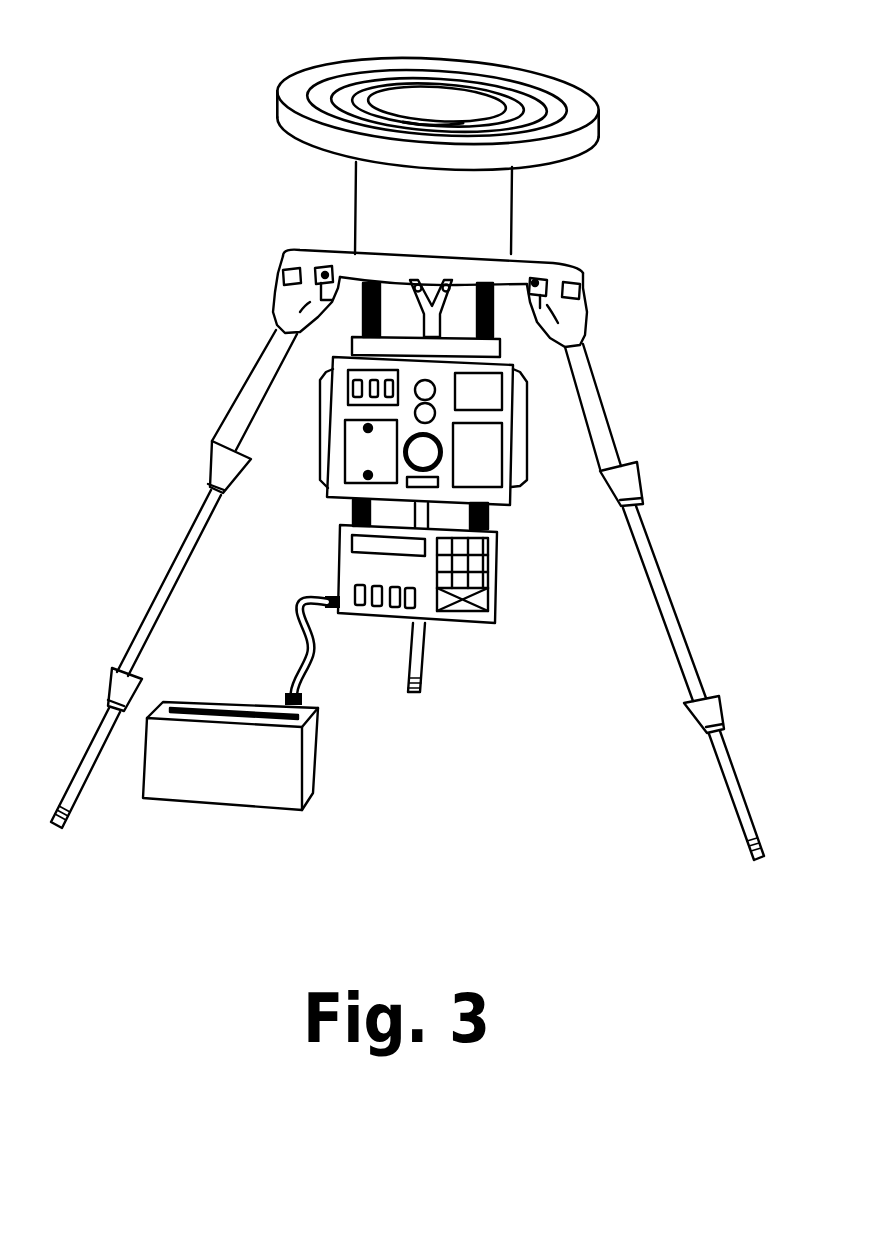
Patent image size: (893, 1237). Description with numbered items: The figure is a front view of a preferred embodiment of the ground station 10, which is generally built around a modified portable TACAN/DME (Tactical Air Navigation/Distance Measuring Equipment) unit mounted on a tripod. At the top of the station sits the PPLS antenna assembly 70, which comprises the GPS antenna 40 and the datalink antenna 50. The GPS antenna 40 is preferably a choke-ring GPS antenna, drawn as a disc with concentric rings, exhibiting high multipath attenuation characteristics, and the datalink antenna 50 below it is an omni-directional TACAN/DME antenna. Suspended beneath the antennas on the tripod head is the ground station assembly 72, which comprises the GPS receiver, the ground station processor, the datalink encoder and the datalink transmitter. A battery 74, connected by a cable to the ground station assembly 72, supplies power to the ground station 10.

The ground station 10 is at (208, 222).
The GPS antenna 40 is at (592, 97).
The datalink antenna 50 is at (515, 213).
The PPLS antenna assembly 70 is at (288, 55).
The ground station assembly 72 is at (520, 477).
The battery 74 is at (320, 740).